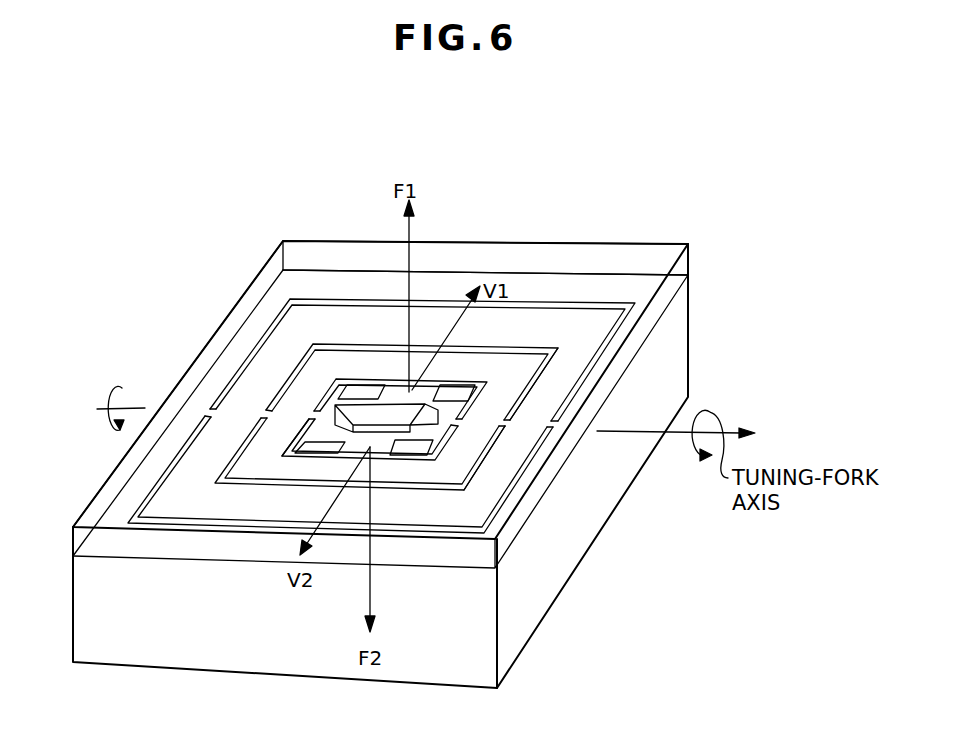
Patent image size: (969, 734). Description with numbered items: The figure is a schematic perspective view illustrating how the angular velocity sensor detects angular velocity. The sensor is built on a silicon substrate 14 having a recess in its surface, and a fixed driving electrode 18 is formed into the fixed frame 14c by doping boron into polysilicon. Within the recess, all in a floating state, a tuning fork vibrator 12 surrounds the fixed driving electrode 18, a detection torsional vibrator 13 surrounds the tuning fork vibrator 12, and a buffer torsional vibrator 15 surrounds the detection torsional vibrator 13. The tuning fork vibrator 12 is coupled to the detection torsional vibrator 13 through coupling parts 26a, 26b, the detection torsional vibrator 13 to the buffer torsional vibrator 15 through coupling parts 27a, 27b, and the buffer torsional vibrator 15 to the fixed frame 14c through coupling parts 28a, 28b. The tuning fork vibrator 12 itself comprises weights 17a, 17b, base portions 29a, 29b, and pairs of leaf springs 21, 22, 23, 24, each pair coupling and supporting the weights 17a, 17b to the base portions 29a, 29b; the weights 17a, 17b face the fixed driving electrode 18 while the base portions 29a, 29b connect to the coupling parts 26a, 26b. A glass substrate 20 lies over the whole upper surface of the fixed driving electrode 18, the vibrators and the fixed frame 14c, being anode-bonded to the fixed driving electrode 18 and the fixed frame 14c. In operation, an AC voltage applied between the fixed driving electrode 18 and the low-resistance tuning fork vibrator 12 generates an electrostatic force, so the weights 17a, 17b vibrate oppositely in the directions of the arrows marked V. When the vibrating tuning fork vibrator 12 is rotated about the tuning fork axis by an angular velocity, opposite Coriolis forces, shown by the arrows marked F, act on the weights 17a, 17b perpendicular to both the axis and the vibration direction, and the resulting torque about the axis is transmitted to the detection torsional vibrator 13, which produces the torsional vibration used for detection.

The tuning fork vibrator 12 is at (382, 414).
The detection torsional vibrator 13 is at (242, 468).
The silicon substrate 14 is at (521, 626).
The fixed frame 14c is at (122, 502).
The buffer torsional vibrator 15 is at (190, 506).
The weight 17a is at (428, 382).
The weight 17b is at (410, 447).
The fixed driving electrode 18 is at (387, 378).
The glass substrate 20 is at (642, 262).
The leaf spring 21 is at (332, 450).
The leaf spring 22 is at (470, 500).
The leaf spring 23 is at (342, 398).
The leaf spring 24 is at (522, 388).
The coupling part 26a is at (307, 410).
The coupling part 26b is at (462, 422).
The coupling part 27a is at (262, 413).
The coupling part 27b is at (507, 423).
The coupling part 28a is at (208, 413).
The coupling part 28b is at (557, 424).
The base portion 29a is at (305, 427).
The base portion 29b is at (490, 454).